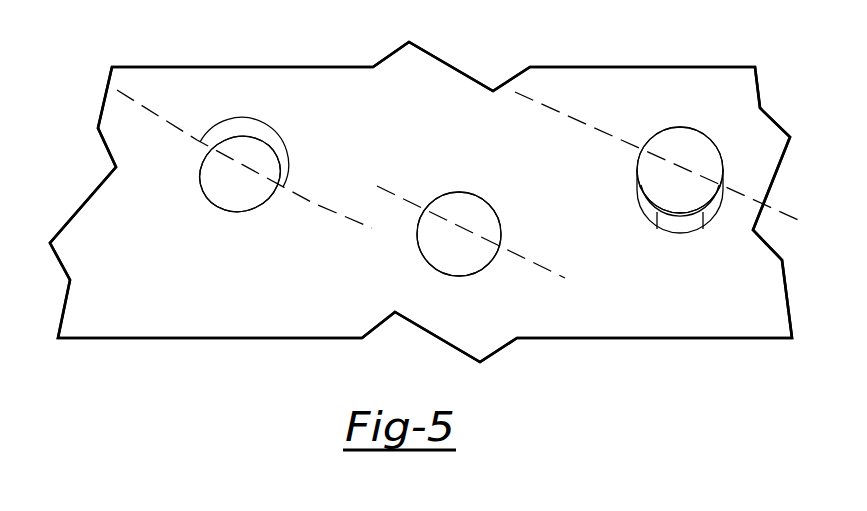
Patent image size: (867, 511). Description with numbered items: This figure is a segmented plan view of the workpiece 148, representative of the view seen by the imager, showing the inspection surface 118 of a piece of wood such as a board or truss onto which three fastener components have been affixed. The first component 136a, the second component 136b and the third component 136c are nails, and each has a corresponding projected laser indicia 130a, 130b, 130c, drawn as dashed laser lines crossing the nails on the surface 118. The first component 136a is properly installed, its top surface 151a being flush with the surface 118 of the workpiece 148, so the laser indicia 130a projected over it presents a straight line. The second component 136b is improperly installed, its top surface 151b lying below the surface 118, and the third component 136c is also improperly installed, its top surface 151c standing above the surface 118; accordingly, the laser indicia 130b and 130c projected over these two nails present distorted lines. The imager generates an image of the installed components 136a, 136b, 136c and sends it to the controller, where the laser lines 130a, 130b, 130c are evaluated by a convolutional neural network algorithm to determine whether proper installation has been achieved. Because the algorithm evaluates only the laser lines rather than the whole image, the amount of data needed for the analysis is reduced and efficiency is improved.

The inspection surface 118 is at (440, 99).
The workpiece 148 is at (166, 318).
The laser indicia 130a is at (526, 255).
The laser indicia 130b is at (153, 107).
The laser indicia 130c is at (557, 108).
The top surface 151a is at (476, 253).
The top surface 151b is at (262, 188).
The top surface 151c is at (708, 173).
The first component 136a is at (477, 191).
The second component 136b is at (253, 210).
The third component 136c is at (673, 234).